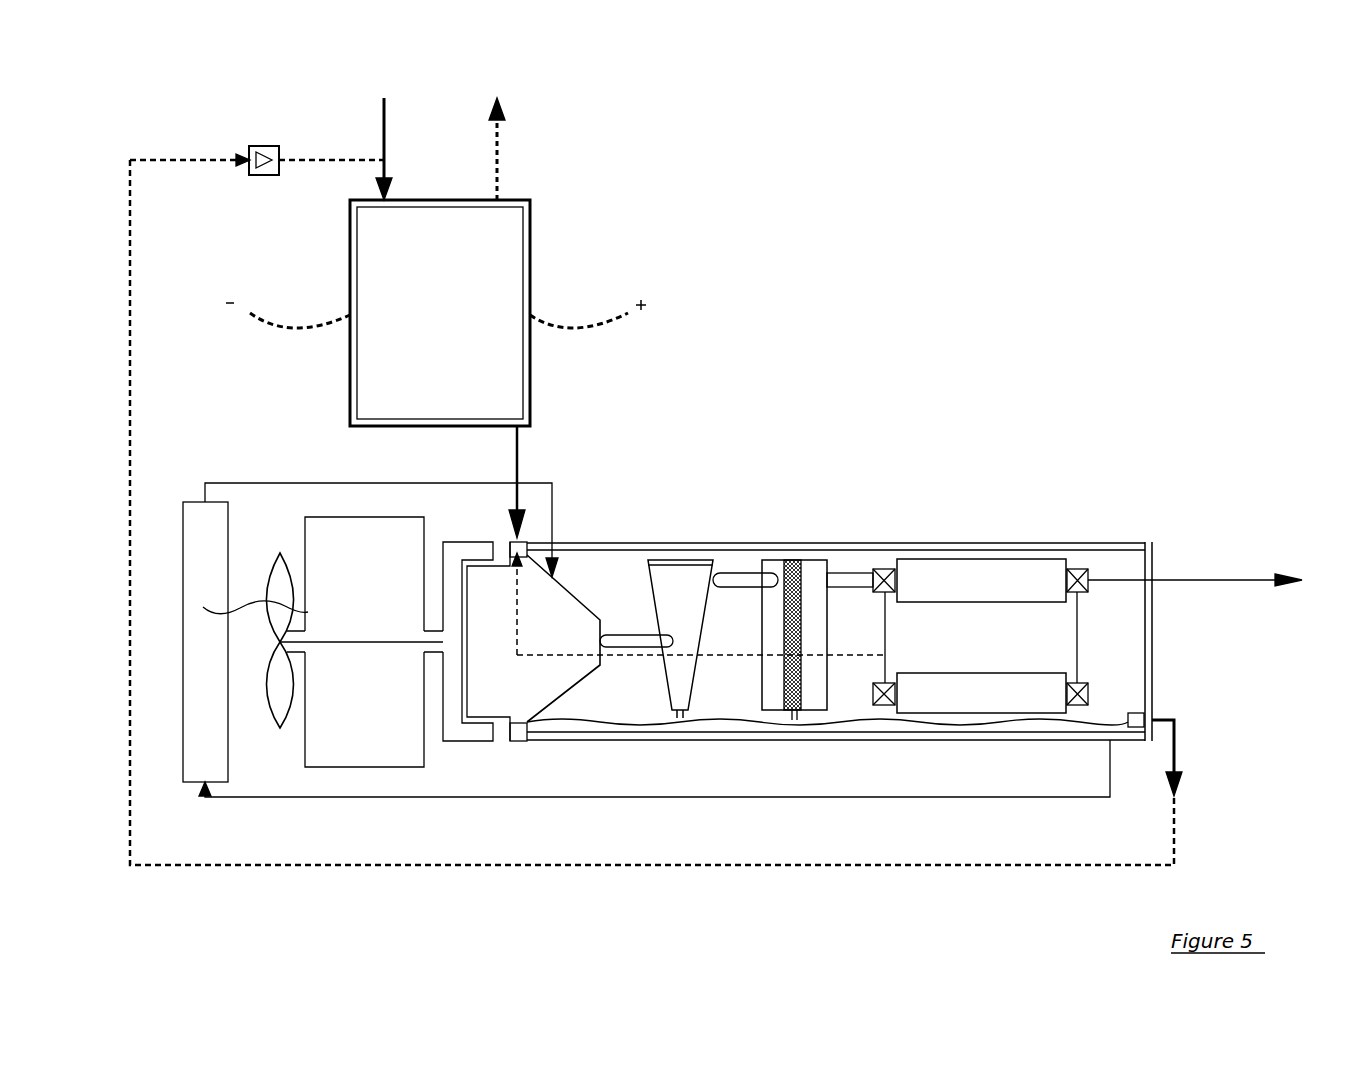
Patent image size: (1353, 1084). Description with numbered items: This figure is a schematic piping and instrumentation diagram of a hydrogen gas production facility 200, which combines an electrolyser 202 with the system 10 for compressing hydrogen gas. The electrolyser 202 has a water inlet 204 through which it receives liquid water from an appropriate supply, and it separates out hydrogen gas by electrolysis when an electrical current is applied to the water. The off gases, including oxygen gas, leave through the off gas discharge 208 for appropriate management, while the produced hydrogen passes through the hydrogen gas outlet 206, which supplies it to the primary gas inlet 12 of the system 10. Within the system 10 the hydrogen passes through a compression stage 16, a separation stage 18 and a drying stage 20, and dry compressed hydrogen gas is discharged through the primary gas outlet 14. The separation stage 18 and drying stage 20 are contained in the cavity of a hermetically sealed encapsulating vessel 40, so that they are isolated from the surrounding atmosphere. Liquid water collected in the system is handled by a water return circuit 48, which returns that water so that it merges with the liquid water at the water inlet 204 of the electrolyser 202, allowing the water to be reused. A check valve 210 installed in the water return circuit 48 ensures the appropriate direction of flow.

The system for compressing hydrogen gas 10 is at (1131, 490).
The primary gas inlet 12 is at (520, 510).
The primary gas outlet 14 is at (1196, 575).
The compression stage 16 is at (588, 571).
The separation stage 18 is at (745, 520).
The drying stage 20 is at (967, 520).
The encapsulating vessel 40 is at (1095, 545).
The water return circuit 48 is at (150, 158).
The hydrogen gas production facility 200 is at (1085, 257).
The electrolyser 202 is at (486, 286).
The water inlet 204 is at (387, 140).
The hydrogen gas outlet 206 is at (522, 428).
The off gas discharge 208 is at (498, 183).
The check valve 210 is at (263, 146).